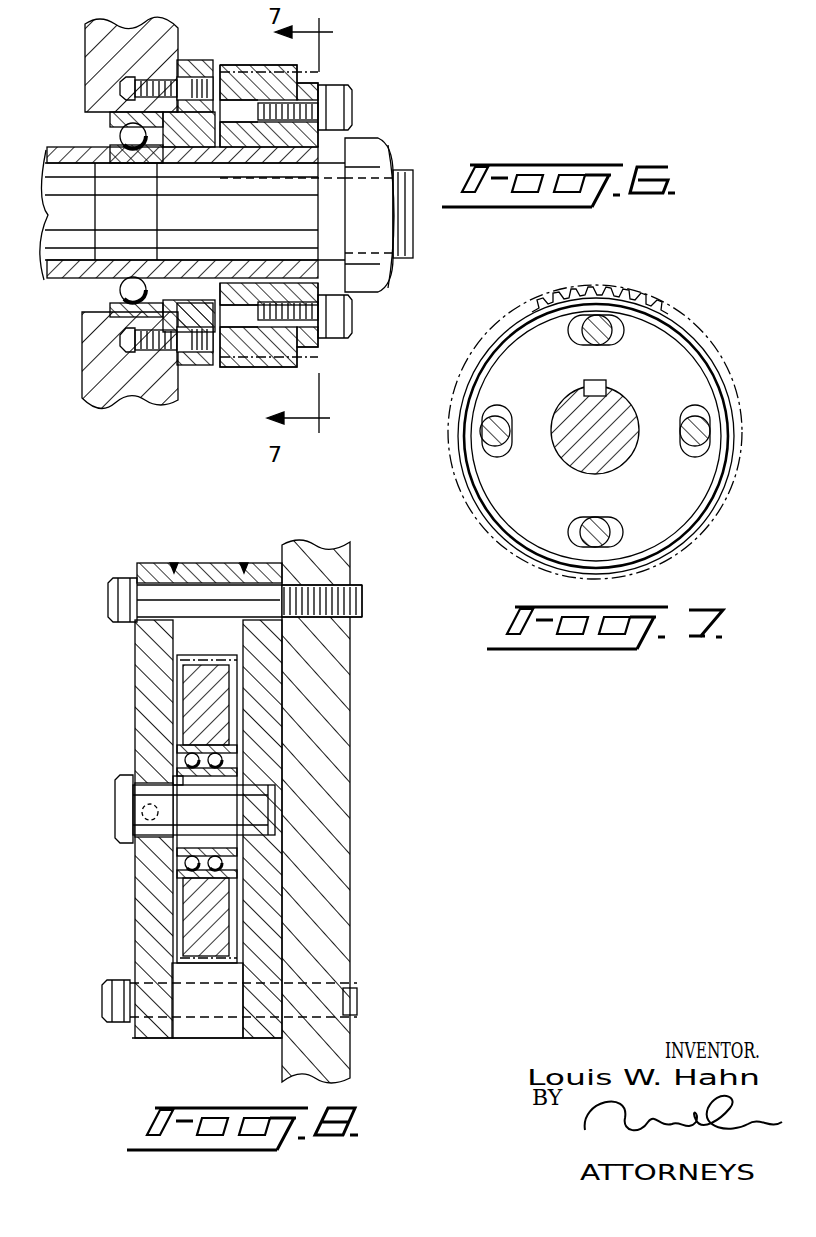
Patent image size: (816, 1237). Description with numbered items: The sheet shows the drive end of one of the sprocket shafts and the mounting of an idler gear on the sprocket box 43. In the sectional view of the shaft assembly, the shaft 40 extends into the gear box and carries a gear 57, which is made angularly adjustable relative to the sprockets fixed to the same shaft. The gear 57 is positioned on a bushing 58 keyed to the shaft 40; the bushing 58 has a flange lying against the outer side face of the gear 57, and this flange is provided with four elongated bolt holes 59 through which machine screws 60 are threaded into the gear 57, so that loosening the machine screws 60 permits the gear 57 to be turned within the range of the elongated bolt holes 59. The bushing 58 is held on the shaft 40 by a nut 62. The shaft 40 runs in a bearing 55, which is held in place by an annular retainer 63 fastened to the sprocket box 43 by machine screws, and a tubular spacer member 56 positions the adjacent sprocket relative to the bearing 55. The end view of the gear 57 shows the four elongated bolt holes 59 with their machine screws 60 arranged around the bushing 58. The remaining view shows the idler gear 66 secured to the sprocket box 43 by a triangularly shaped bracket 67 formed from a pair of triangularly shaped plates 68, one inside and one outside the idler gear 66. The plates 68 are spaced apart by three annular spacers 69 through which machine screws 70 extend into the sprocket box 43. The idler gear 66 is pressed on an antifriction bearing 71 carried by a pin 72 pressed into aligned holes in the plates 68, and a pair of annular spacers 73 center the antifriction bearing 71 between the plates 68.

In FIG. 6, the sprocket box 43 is at (85, 50).
In FIG. 8, the sprocket box 43 is at (350, 812).
In FIG. 6, the annular retainer 63 is at (188, 60).
In FIG. 6, the bushing 58 is at (318, 220).
In FIG. 7, the bushing 58 is at (703, 352).
In FIG. 6, the bearing 55 is at (110, 125).
In FIG. 6, the tubular spacer member 56 is at (77, 282).
In FIG. 6, the gear 57 is at (270, 367).
In FIG. 7, the gear 57 is at (645, 303).
In FIG. 6, the elongated bolt hole 59 is at (238, 105).
In FIG. 7, the elongated bolt hole 59 is at (690, 405).
In FIG. 6, the machine screw 60 is at (352, 108).
In FIG. 7, the machine screw 60 is at (585, 338).
In FIG. 6, the nut 62 is at (393, 150).
In FIG. 6, the shaft 40 is at (413, 228).
In FIG. 8, the annular spacer 69 is at (205, 563).
In FIG. 8, the triangularly shaped plate 68 is at (135, 680).
In FIG. 8, the machine screw 70 is at (108, 596).
In FIG. 8, the triangularly shaped bracket 67 is at (135, 655).
In FIG. 8, the idler gear 66 is at (177, 912).
In FIG. 8, the antifriction bearing 71 is at (177, 867).
In FIG. 8, the pin 72 is at (115, 812).
In FIG. 8, the annular spacer 73 is at (180, 784).